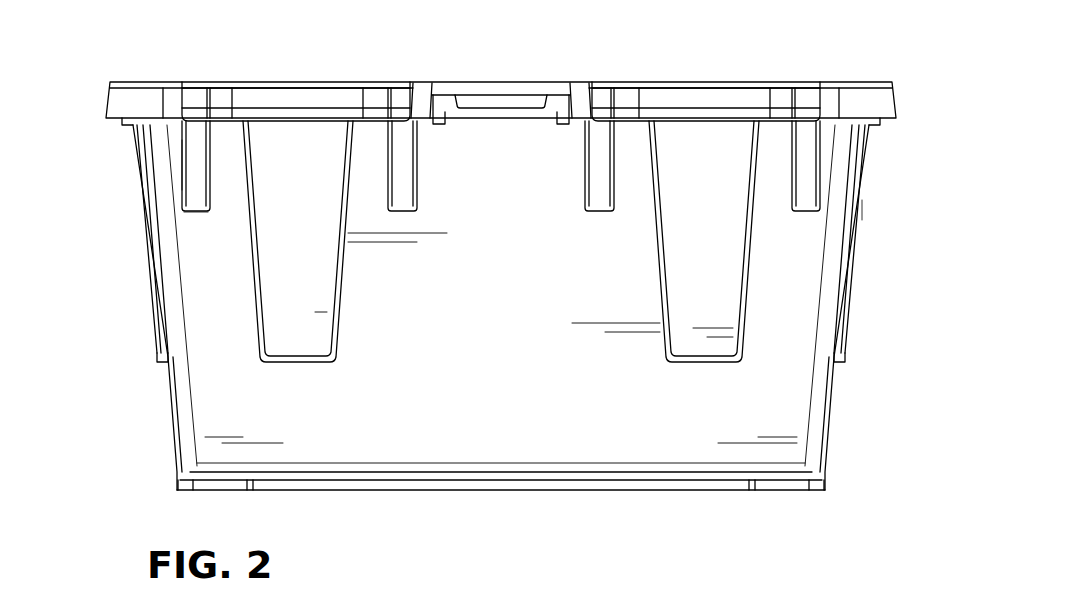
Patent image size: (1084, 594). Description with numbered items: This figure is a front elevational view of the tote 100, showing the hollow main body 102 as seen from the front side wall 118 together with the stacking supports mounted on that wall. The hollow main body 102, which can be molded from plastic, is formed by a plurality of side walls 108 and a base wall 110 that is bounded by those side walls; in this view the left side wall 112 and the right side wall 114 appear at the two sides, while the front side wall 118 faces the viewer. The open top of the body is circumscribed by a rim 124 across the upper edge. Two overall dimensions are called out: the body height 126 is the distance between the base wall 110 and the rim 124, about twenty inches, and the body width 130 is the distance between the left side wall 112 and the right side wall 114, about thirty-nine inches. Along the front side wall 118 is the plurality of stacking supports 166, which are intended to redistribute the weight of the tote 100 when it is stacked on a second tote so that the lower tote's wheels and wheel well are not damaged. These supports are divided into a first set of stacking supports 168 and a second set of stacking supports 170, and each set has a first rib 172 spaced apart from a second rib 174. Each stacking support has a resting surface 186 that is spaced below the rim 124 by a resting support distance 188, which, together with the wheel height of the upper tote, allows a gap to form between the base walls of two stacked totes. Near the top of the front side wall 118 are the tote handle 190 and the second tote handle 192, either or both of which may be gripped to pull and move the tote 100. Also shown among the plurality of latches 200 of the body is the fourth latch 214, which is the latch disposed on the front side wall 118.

The tote 100 is at (501, 263).
The hollow main body 102 is at (862, 210).
The plurality of side walls 108 is at (493, 326).
The base wall 110 is at (455, 496).
The left side wall 112 is at (156, 312).
The right side wall 114 is at (852, 292).
The front side wall 118 is at (785, 405).
The rim 124 is at (140, 85).
The body height 126 is at (942, 490).
The body width 130 is at (110, 0).
The plurality of stacking supports 166 is at (446, 166).
The first set of stacking supports 168 is at (168, 143).
The second set of stacking supports 170 is at (586, 143).
The first rib 172 is at (180, 182).
The second rib 174 is at (252, 190).
The resting surface 186 is at (208, 213).
The resting support distance 188 is at (427, 118).
The tote handle 190 is at (292, 101).
The second tote handle 192 is at (702, 101).
The plurality of latches 200 is at (501, 181).
The fourth latch 214 is at (492, 108).